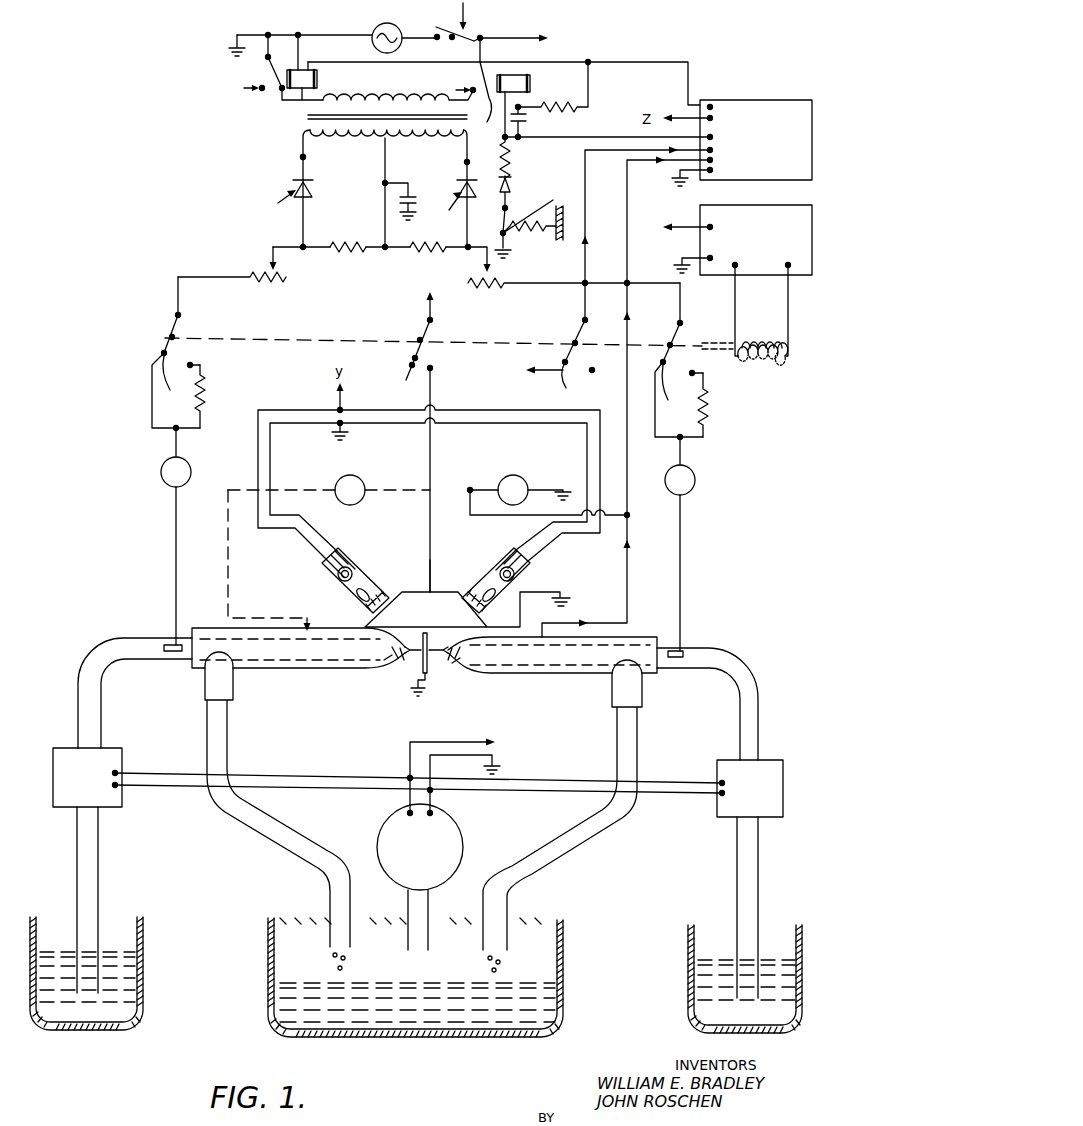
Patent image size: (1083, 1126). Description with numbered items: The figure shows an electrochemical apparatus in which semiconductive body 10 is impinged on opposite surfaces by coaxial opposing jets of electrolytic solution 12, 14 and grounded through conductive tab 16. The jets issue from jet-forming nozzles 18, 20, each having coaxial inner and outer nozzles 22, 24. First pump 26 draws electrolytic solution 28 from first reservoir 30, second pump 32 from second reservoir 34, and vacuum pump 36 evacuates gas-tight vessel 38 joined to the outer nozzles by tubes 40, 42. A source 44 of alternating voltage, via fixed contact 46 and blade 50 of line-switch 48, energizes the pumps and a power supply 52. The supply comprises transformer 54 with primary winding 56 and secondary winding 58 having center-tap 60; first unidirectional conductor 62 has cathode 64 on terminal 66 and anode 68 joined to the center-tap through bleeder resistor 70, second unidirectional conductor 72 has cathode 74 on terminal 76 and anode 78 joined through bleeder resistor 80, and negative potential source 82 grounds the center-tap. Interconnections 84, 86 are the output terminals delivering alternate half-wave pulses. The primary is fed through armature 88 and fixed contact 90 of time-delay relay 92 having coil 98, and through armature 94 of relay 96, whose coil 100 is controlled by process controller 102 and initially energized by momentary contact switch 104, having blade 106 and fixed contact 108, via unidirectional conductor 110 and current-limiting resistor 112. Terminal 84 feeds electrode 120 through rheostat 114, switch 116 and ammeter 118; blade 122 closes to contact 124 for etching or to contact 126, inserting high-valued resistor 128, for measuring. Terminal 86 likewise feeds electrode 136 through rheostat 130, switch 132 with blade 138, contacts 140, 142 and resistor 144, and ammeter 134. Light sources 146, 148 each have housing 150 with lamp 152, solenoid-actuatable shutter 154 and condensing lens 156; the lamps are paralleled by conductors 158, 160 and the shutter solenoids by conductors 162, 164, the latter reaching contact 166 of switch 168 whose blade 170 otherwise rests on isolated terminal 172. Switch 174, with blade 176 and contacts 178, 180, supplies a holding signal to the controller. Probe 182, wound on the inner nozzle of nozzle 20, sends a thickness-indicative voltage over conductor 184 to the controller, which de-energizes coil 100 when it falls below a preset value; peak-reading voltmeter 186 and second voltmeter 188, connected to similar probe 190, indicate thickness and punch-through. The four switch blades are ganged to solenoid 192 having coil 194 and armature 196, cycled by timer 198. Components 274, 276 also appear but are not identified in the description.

The workpiece plate 10 is at (427, 676).
The left electrode tip 12 is at (410, 644).
The right electrode tip 14 is at (446, 644).
The ground connection 16 is at (418, 698).
The left electrode tube 18 is at (283, 669).
The right electrode tube 20 is at (560, 674).
The electrode nozzle 22 is at (403, 662).
The electrode tip flange 24 is at (397, 660).
The left pump 26 is at (122, 802).
The liquid 28 is at (118, 1001).
The left container 30 is at (143, 975).
The right pump 32 is at (716, 812).
The right container 34 is at (688, 965).
The vacuum pump 36 is at (462, 832).
The center container 38 is at (565, 975).
The left drain pipe 40 is at (262, 838).
The right drain pipe 42 is at (578, 848).
The AC source 44 is at (374, 30).
The switch 46 is at (440, 30).
The input line 48 is at (474, 16).
The switch contact 50 is at (444, 47).
The power supply circuit 52 is at (250, 171).
The transformer 54 is at (296, 114).
The primary winding 56 is at (368, 95).
The secondary winding half 58 is at (342, 138).
The secondary center tap 60 is at (384, 140).
The gate lead 62 is at (278, 203).
The rectifier cathode 64 is at (313, 183).
The junction 66 is at (300, 157).
The controlled rectifier 68 is at (310, 195).
The resistor 70 is at (348, 252).
The controlled rectifier 72 is at (474, 199).
The rectifier cathode 74 is at (477, 179).
The junction 76 is at (465, 162).
The gate lead 78 is at (449, 210).
The resistor 80 is at (424, 252).
The capacitor 82 is at (415, 197).
The potentiometer wiper lead 84 is at (303, 252).
The bus junction 86 is at (466, 251).
The switch blade 88 is at (266, 64).
The switch contact 90 is at (260, 91).
The supply line 92 is at (374, 44).
The switch blade 94 is at (480, 74).
The supply line 96 is at (521, 42).
The time delay relay 98 is at (319, 80).
The relay 100 is at (533, 82).
The process controller 102 is at (752, 100).
The resistor 104 is at (529, 241).
The thermal element 106 is at (569, 212).
The switch 108 is at (515, 205).
The diode 110 is at (509, 178).
The resistor 112 is at (511, 152).
The potentiometer 114 is at (268, 286).
The electrode circuit 116 is at (151, 380).
The ammeter 118 is at (190, 472).
The electrode contact 120 is at (166, 645).
The switch 122 is at (170, 335).
The switch blade 124 is at (173, 383).
The switch contact 126 is at (190, 364).
The resistor 128 is at (206, 398).
The potentiometer 130 is at (488, 288).
The electrode circuit 132 is at (673, 397).
The ammeter 134 is at (694, 474).
The electrode contact 136 is at (684, 651).
The switch 138 is at (672, 340).
The switch blade 140 is at (675, 392).
The switch contact 142 is at (692, 370).
The resistor 144 is at (708, 398).
The left probe assembly 146 is at (357, 580).
The right probe assembly 148 is at (495, 580).
The probe holder 150 is at (342, 552).
The probe ring 152 is at (337, 576).
The insulator 154 is at (386, 595).
The probe tube 156 is at (358, 599).
The voltmeter lead 158 is at (455, 424).
The voltmeter lead 160 is at (485, 410).
The nozzle block 162 is at (467, 609).
The block lead 164 is at (430, 565).
The junction 166 is at (433, 372).
The switch 168 is at (397, 357).
The switch blade 170 is at (424, 338).
The switch blade 172 is at (406, 380).
The switch 174 is at (535, 360).
The switch blade 176 is at (578, 346).
The switch blade 178 is at (573, 383).
The switch contact 180 is at (593, 374).
The electrode sleeve 182 is at (454, 664).
The signal line 184 is at (628, 560).
The voltmeter 186 is at (522, 477).
The voltmeter 188 is at (358, 476).
The electrode sleeve 190 is at (384, 660).
The solenoid 192 is at (762, 319).
The solenoid coil 194 is at (766, 345).
The solenoid plunger 196 is at (716, 340).
The timer 198 is at (770, 205).
The resistor 274 is at (574, 112).
The capacitor 276 is at (528, 118).